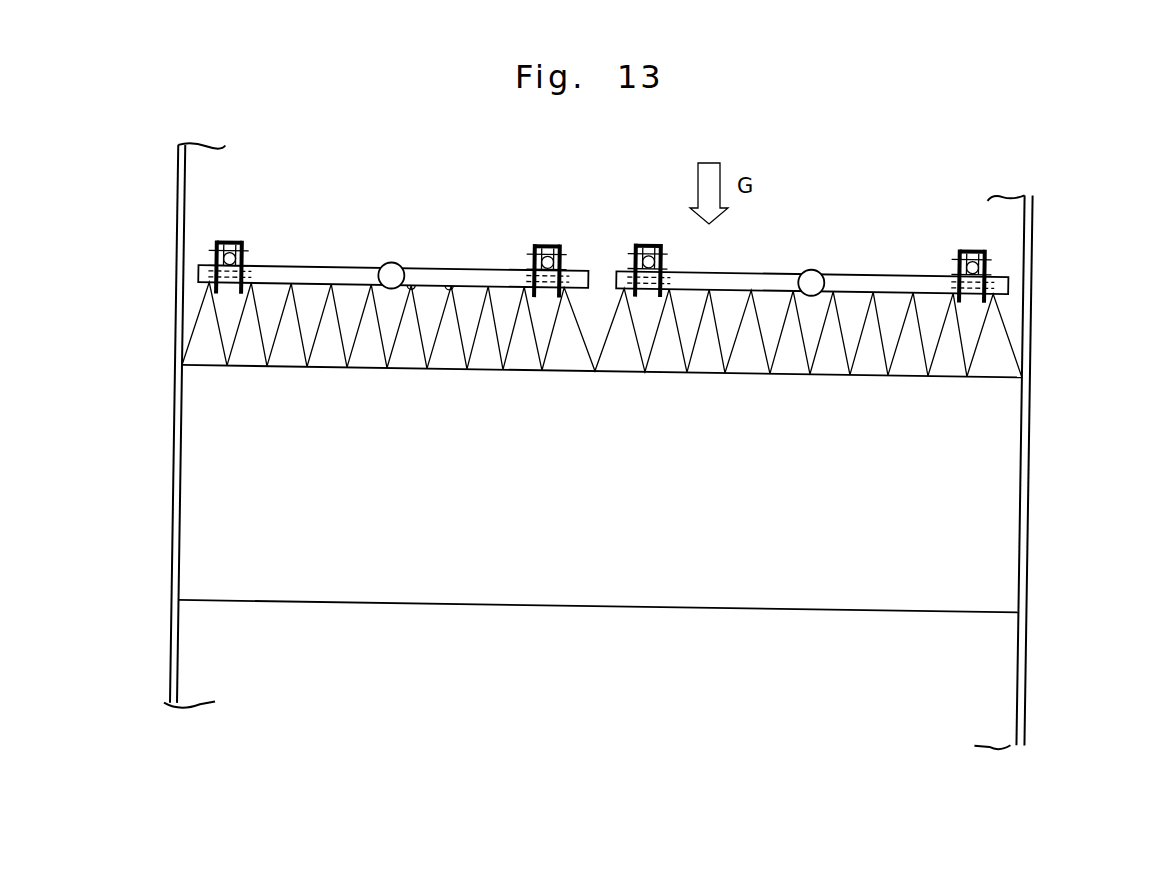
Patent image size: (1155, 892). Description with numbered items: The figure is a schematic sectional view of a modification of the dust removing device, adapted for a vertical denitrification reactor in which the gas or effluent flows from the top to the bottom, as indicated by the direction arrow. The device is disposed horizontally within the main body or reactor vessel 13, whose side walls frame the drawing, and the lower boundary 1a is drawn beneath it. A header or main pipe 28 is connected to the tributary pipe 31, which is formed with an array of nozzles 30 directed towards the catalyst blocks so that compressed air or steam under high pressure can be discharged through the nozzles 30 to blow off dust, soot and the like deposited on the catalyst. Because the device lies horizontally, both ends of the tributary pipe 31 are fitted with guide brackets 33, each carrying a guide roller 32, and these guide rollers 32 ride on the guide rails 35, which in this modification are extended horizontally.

The main body or reactor vessel 13 is at (1038, 328).
The bottom panel 1a is at (683, 552).
The tributary pipe 31 is at (885, 282).
The header or main pipe 28 is at (811, 278).
The nozzle 30 is at (452, 283).
The guide roller 32 is at (228, 240).
The guide bracket 33 is at (532, 258).
The guide rail 35 is at (241, 258).